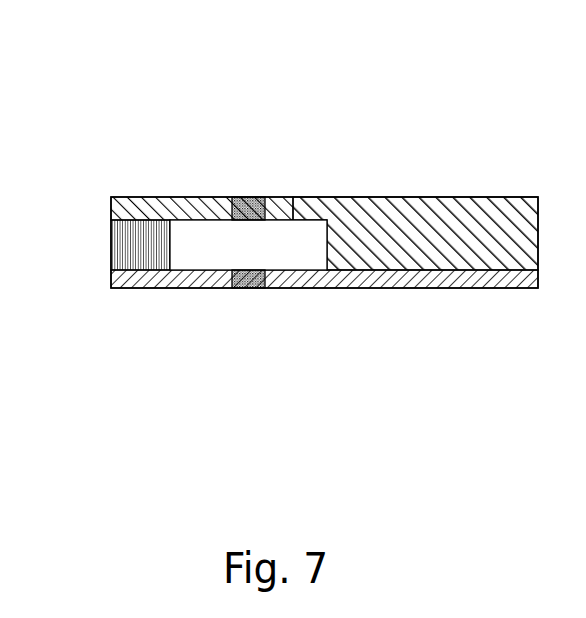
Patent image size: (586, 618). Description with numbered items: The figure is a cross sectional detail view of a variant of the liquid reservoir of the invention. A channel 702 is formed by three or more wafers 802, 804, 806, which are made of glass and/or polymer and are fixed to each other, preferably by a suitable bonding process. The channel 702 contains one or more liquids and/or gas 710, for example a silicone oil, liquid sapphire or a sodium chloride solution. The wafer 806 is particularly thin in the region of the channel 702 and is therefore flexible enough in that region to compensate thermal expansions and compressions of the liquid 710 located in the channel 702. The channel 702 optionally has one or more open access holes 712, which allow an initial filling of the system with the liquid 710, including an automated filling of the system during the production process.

The channel 702 is at (293, 197).
The liquid 710 is at (210, 253).
The open access hole 712 is at (250, 197).
The wafer 802 is at (418, 197).
The wafer 804 is at (110, 250).
The wafer 806 is at (398, 290).